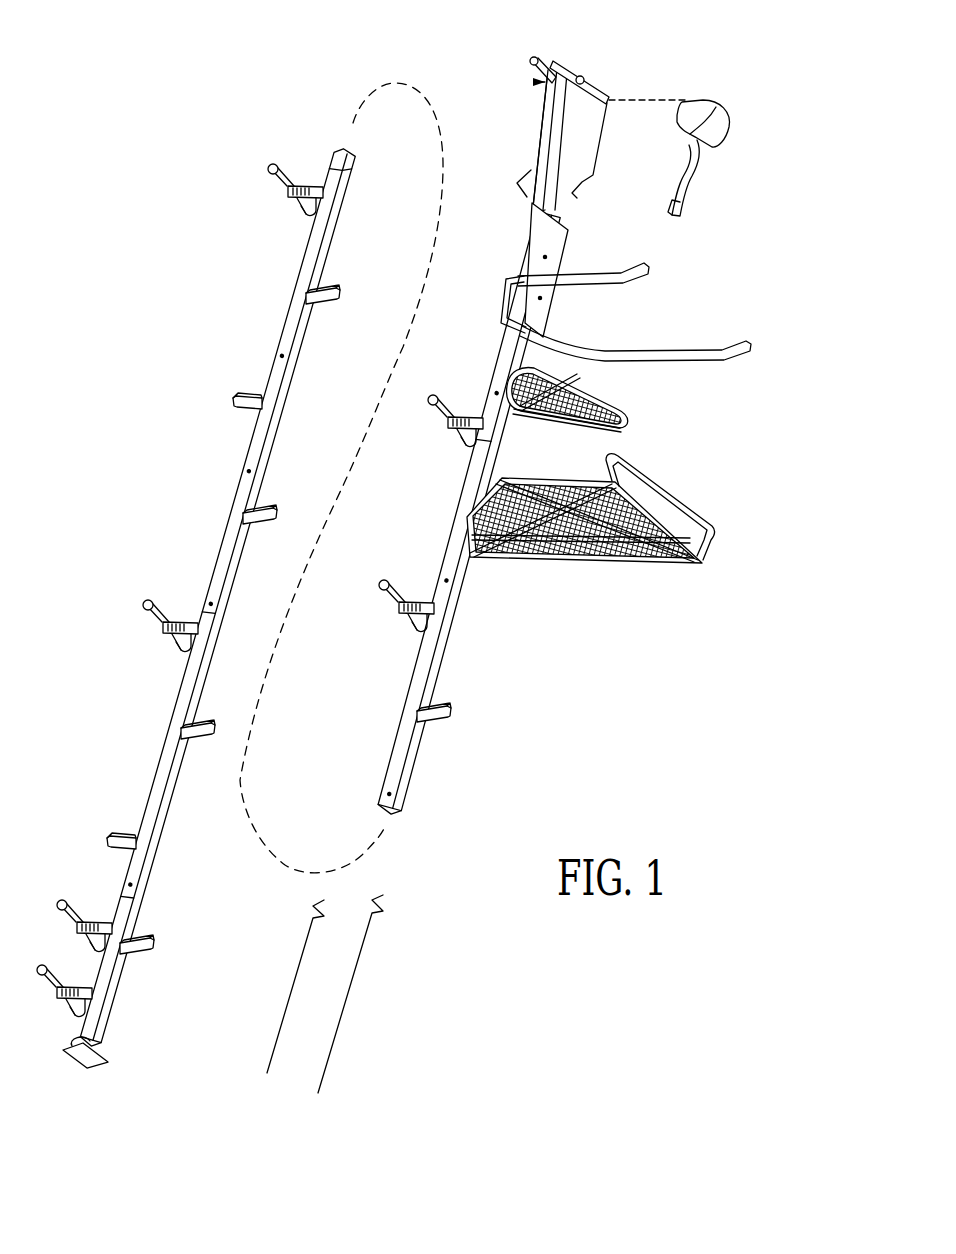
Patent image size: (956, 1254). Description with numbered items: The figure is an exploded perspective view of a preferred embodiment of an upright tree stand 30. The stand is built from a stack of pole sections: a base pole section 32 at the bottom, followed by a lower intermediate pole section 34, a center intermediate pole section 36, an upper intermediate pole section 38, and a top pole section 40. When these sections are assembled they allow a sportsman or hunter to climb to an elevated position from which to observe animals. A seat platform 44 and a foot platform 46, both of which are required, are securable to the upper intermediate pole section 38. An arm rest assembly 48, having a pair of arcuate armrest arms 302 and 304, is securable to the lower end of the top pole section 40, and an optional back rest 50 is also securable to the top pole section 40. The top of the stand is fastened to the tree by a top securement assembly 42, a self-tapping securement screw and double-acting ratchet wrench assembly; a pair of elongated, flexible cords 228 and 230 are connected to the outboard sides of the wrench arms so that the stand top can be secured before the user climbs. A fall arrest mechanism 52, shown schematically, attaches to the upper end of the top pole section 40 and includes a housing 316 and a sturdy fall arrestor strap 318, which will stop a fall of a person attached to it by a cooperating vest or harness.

The upright tree stand 30 is at (432, 558).
The base pole section 32 is at (196, 607).
The lower intermediate pole section 34 is at (136, 745).
The center intermediate pole section 36 is at (226, 362).
The upper intermediate pole section 38 is at (534, 610).
The top pole section 40 is at (636, 235).
The top securement assembly 42 is at (592, 118).
The seat platform 44 is at (648, 410).
The foot platform 46 is at (728, 517).
The arm rest assembly 48 is at (644, 348).
The back rest 50 is at (595, 294).
The fall arrest mechanism 52 is at (744, 139).
The elongated flexible cord 228 is at (596, 148).
The elongated flexible cord 230 is at (534, 142).
The arcuate armrest arm 302 is at (590, 288).
The arcuate armrest arm 304 is at (683, 362).
The housing 316 is at (720, 108).
The fall arrestor strap 318 is at (706, 170).